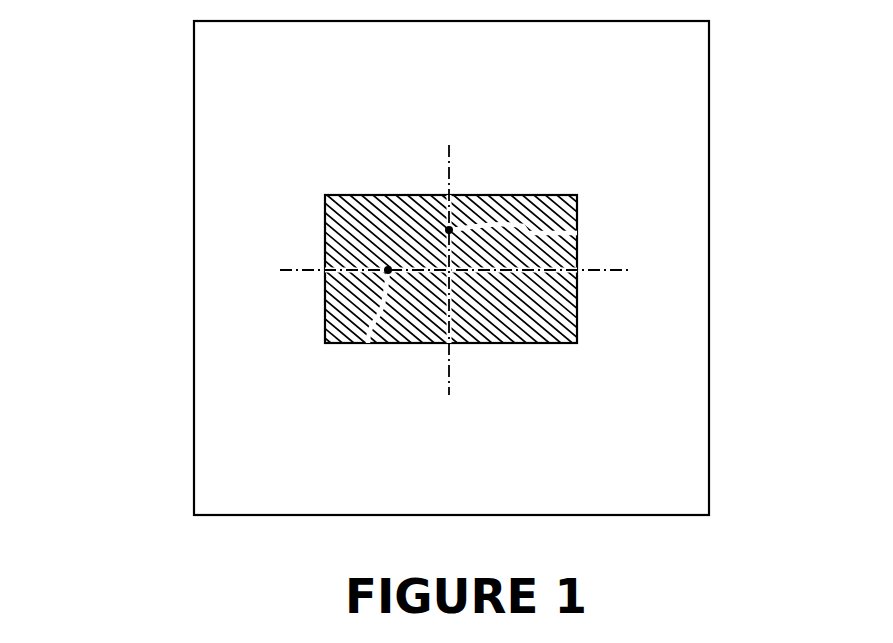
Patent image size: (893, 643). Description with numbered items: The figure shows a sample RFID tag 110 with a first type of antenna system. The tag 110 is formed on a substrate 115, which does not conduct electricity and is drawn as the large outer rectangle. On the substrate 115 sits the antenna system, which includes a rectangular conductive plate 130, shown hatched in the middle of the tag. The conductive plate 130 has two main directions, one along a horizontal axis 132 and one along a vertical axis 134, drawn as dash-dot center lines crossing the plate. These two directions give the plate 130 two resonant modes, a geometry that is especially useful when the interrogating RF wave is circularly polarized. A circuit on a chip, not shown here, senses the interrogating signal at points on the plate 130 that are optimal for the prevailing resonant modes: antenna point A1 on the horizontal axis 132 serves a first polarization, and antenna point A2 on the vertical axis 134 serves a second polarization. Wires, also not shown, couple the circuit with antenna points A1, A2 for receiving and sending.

The RFID tag 110 is at (135, 147).
The substrate 115 is at (710, 117).
The rectangular conductive plate 130 is at (345, 195).
The horizontal axis 132 is at (297, 271).
The vertical axis 134 is at (452, 159).
The antenna point A1 is at (388, 272).
The antenna point A2 is at (452, 230).